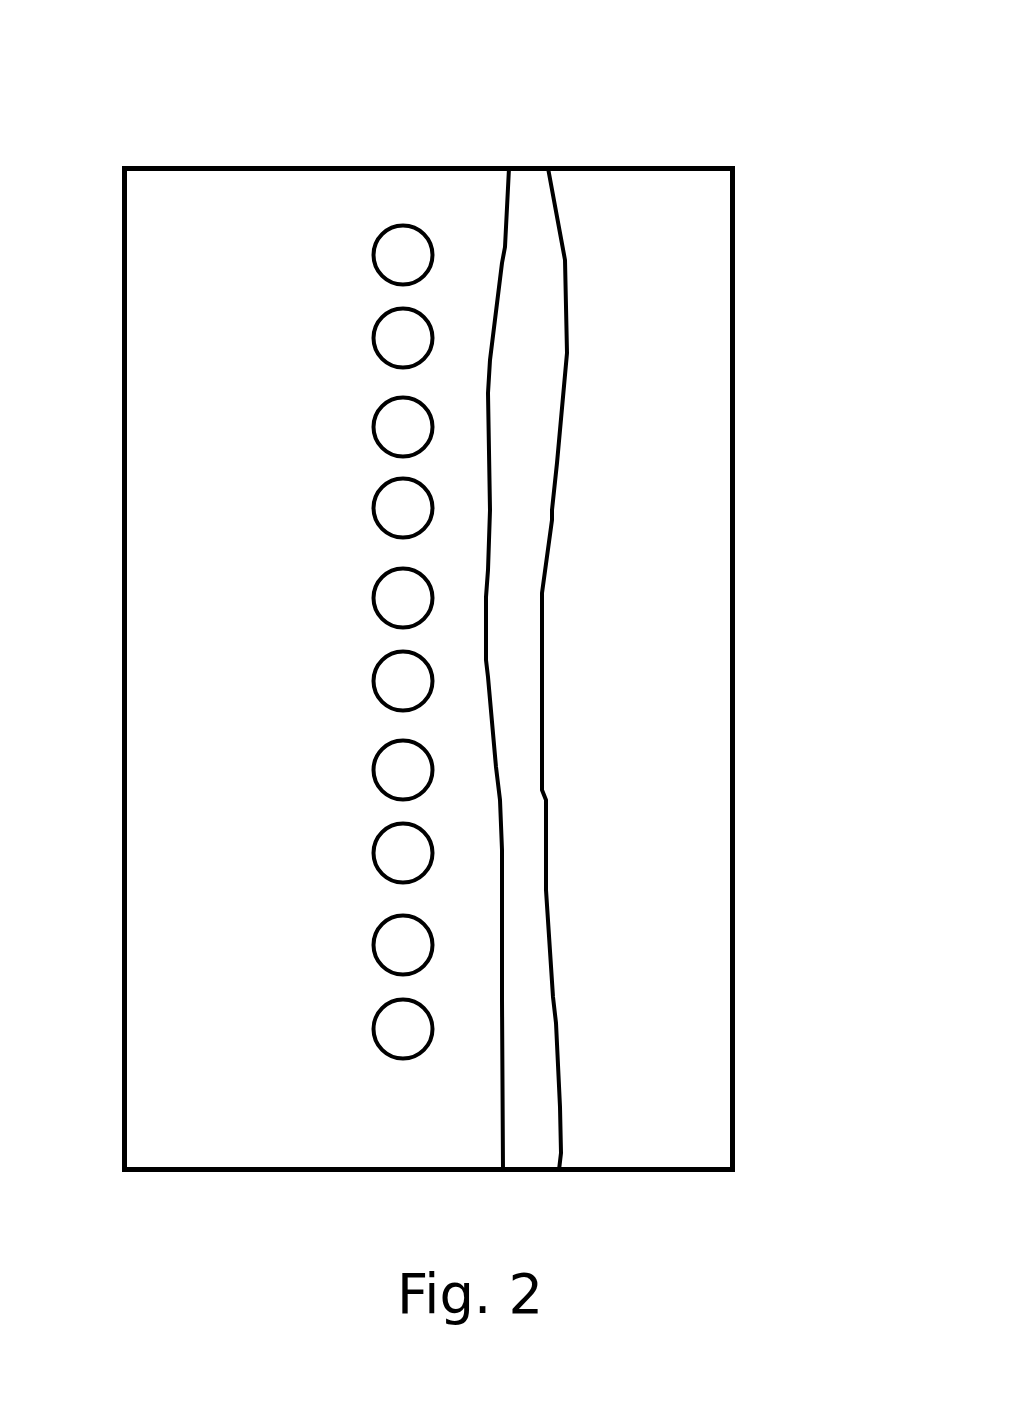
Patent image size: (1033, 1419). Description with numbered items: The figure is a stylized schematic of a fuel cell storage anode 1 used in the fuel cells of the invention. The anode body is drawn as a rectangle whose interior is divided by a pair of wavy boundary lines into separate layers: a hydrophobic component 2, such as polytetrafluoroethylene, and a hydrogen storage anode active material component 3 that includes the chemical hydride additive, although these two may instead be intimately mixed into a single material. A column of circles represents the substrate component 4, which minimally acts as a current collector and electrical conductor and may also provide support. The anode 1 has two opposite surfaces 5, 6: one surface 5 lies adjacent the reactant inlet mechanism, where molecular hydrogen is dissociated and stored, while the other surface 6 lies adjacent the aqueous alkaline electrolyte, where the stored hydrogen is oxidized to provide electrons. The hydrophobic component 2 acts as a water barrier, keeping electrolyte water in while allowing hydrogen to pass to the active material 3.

The fuel cell storage anode 1 is at (412, 130).
The hydrophobic component 2 is at (526, 669).
The hydrogen storage anode active material component 3 is at (170, 1302).
The substrate component 4 is at (418, 853).
The surface 5 is at (121, 735).
The surface 6 is at (737, 662).